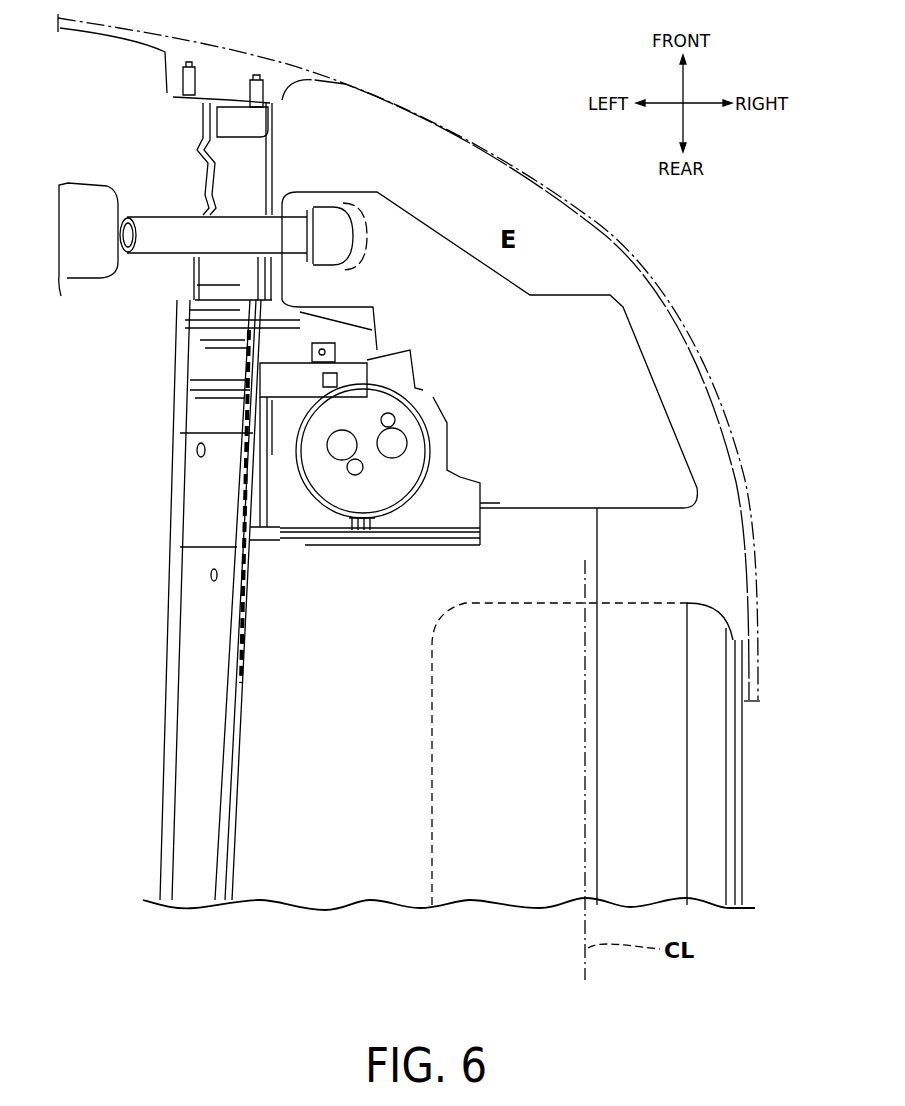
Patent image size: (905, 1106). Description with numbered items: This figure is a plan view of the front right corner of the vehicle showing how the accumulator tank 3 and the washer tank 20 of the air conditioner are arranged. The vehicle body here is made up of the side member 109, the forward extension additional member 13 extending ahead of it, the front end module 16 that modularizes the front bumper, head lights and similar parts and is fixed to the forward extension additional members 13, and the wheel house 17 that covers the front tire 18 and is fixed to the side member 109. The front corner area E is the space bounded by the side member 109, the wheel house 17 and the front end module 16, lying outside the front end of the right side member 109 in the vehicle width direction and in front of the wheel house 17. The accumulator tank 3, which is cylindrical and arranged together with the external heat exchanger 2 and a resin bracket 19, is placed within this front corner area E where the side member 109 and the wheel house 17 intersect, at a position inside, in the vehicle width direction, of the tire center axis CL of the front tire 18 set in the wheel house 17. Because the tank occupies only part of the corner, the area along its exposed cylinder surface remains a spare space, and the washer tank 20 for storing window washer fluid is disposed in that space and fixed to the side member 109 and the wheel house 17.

The external heat exchanger 2 is at (88, 282).
The accumulator tank 3 is at (408, 500).
The forward extension additional member 13 is at (225, 170).
The front end module 16 is at (410, 91).
The wheel house 17 is at (360, 850).
The front tire 18 is at (653, 812).
The resin bracket 19 is at (300, 508).
The washer tank 20 is at (535, 360).
The side member 109 is at (200, 668).